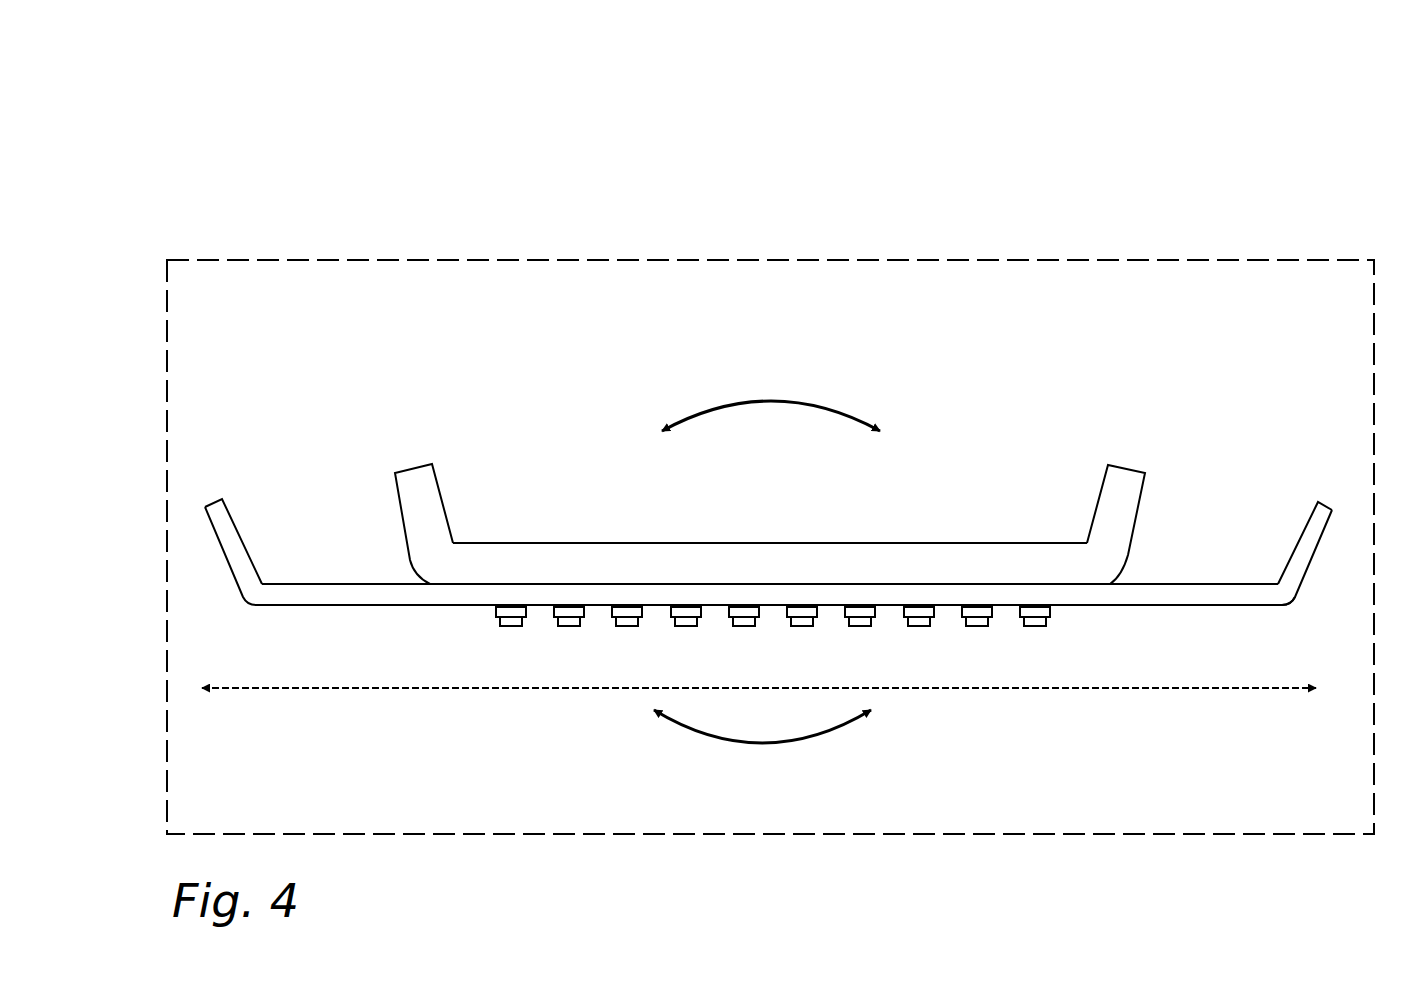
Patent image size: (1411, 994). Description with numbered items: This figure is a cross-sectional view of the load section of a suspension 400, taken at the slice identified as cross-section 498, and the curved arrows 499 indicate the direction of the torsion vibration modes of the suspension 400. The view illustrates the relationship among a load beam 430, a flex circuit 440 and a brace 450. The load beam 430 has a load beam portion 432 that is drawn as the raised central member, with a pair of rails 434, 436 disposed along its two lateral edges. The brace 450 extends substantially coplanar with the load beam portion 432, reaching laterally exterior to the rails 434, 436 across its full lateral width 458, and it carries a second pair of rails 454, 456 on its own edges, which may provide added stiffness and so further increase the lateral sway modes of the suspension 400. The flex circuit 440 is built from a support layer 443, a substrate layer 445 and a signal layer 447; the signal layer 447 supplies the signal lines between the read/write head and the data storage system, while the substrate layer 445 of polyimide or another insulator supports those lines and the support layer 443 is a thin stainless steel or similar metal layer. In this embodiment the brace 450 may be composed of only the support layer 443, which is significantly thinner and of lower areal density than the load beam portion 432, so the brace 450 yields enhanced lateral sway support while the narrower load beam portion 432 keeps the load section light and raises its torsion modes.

The suspension 400 is at (1217, 58).
The cross-section 498 is at (1224, 256).
The load beam 430 is at (510, 398).
The load beam portion 432 is at (580, 542).
The rail 434 is at (1122, 467).
The rail 436 is at (418, 465).
The flex circuit 440 is at (578, 730).
The support layer 443 is at (1263, 618).
The substrate layer 445 is at (1056, 612).
The signal layer 447 is at (1056, 622).
The brace 450 is at (1232, 580).
The rail 454 is at (1325, 500).
The rail 456 is at (222, 497).
The lateral width 458 is at (960, 690).
The direction of torsion vibration modes 499 is at (767, 572).